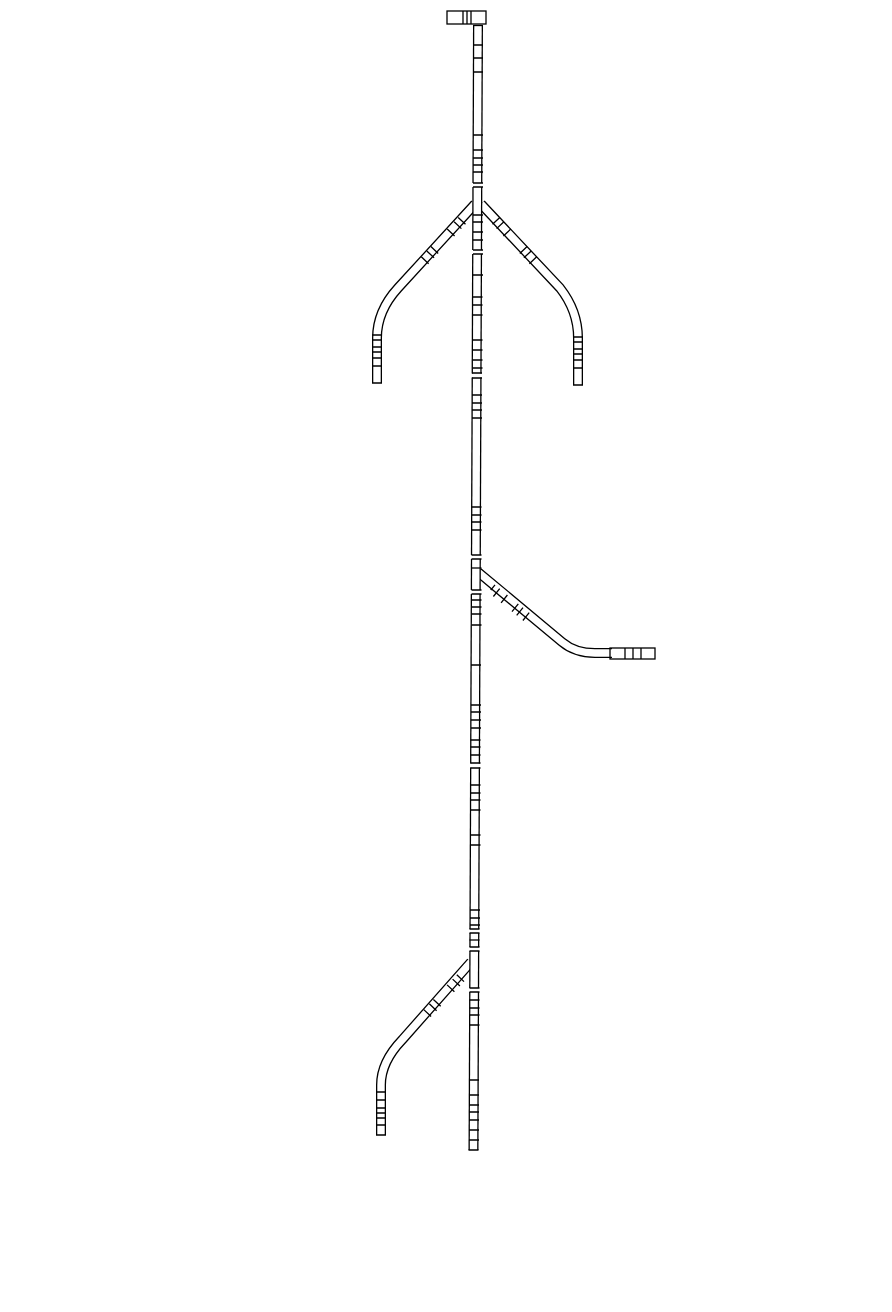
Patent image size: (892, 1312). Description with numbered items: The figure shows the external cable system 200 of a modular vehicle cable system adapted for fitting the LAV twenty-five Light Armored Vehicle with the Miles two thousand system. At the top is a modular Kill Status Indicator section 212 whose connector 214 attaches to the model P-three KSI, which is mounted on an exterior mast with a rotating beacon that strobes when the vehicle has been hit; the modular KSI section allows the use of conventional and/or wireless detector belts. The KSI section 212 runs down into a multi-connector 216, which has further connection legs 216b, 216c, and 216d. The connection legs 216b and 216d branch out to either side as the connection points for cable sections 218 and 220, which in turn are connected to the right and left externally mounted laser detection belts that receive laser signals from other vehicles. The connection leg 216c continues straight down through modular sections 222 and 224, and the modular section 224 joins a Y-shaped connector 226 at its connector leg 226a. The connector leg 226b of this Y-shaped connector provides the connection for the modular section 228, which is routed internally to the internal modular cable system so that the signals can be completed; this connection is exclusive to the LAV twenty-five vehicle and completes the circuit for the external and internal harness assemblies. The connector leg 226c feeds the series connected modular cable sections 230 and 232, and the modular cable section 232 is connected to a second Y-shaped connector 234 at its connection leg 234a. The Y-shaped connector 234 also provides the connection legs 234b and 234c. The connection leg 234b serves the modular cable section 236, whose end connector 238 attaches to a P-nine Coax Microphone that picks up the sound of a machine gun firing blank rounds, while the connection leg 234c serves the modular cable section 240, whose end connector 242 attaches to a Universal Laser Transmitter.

The external cable system 200 is at (232, 184).
The modular Kill Status Indicator section 212 is at (489, 97).
The connector 214 is at (456, 29).
The multi-connector 216 is at (486, 190).
The connection leg 216b is at (462, 212).
The connection leg 216c is at (486, 230).
The connection leg 216d is at (498, 214).
The cable section 218 is at (372, 326).
The cable section 220 is at (584, 333).
The modular section 222 is at (484, 318).
The modular section 224 is at (483, 450).
The Y-shaped connector 226 is at (473, 560).
The connector leg 226a is at (485, 565).
The connector leg 226b is at (493, 578).
The connector leg 226c is at (476, 582).
The modular section 228 is at (598, 662).
The modular cable section 230 is at (473, 658).
The modular cable section 232 is at (480, 852).
The Y-shaped connector 234 is at (483, 952).
The connection leg 234a is at (473, 930).
The connection leg 234b is at (460, 960).
The connection leg 234c is at (483, 968).
The modular cable section 236 is at (392, 1052).
The end connector 238 is at (375, 1128).
The modular cable section 240 is at (480, 1052).
The end connector 242 is at (480, 1145).